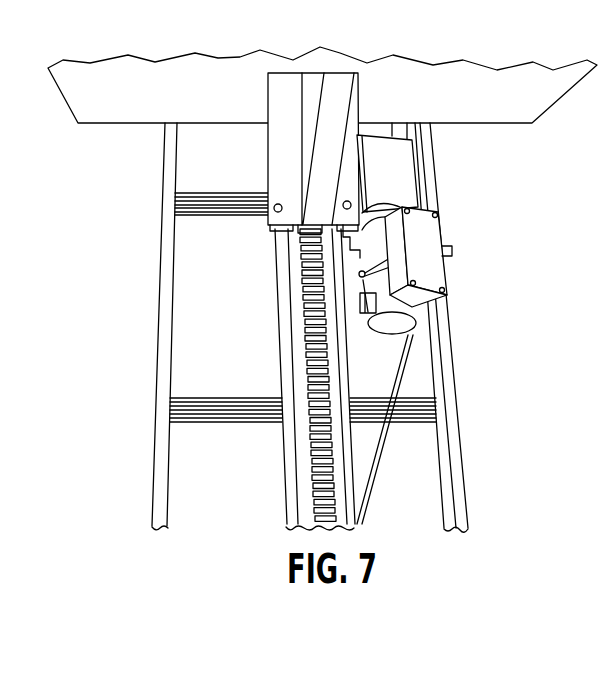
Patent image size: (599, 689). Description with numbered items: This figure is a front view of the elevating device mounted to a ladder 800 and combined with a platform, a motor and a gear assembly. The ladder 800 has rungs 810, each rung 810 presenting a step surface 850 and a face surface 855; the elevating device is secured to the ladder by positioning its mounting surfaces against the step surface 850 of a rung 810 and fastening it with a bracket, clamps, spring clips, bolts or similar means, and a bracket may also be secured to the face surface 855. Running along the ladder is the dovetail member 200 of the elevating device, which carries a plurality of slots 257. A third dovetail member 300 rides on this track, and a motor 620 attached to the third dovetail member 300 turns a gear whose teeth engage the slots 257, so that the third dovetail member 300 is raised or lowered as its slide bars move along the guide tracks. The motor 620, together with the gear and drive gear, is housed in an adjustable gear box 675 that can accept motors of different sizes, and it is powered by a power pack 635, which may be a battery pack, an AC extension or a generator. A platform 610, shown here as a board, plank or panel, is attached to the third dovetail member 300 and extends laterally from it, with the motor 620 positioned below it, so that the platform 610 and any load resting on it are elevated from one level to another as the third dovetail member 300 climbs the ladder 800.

The platform 610 is at (170, 108).
The ladder 800 is at (159, 318).
The ladder rung 810 is at (234, 218).
The step surface 850 is at (214, 398).
The face surface 855 is at (235, 470).
The third dovetail member 300 is at (286, 158).
The second dovetail member 200 is at (283, 305).
The slots 257 is at (328, 378).
The gear box 675 is at (400, 184).
The power pack 635 is at (438, 263).
The motor 620 is at (391, 328).